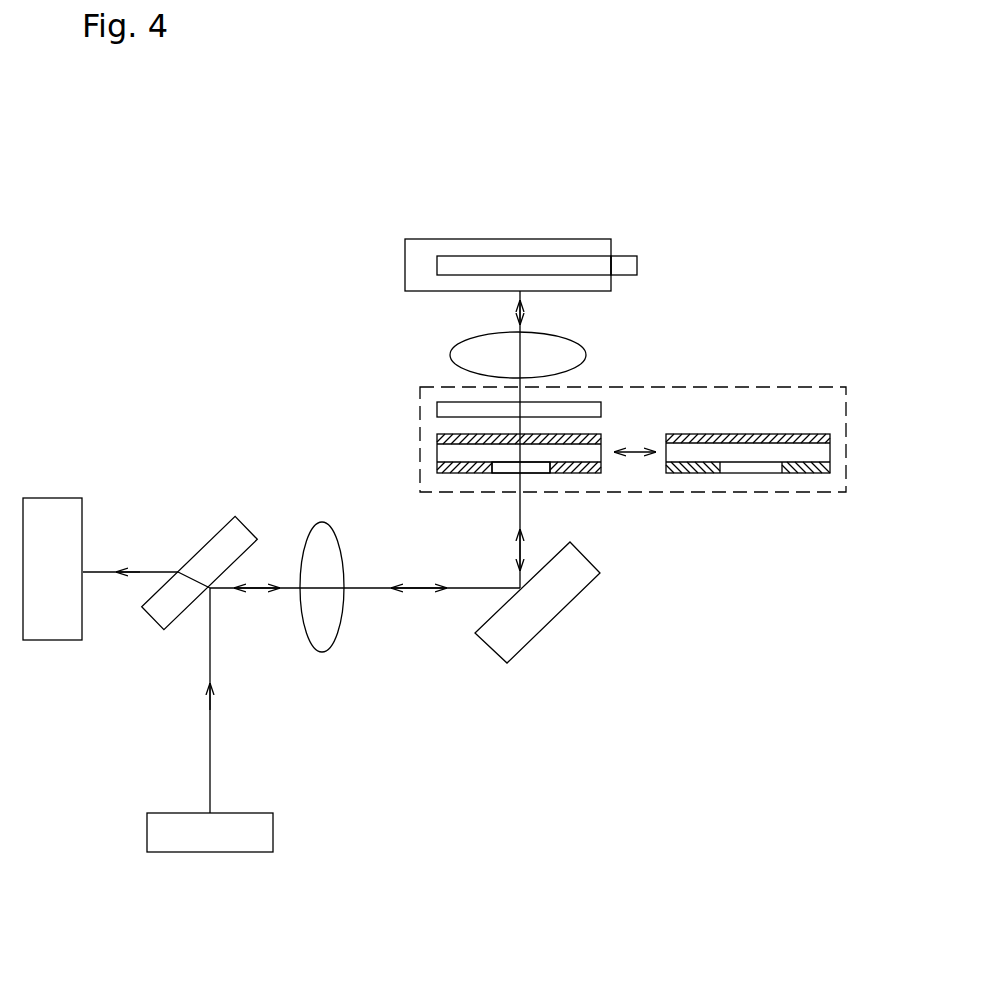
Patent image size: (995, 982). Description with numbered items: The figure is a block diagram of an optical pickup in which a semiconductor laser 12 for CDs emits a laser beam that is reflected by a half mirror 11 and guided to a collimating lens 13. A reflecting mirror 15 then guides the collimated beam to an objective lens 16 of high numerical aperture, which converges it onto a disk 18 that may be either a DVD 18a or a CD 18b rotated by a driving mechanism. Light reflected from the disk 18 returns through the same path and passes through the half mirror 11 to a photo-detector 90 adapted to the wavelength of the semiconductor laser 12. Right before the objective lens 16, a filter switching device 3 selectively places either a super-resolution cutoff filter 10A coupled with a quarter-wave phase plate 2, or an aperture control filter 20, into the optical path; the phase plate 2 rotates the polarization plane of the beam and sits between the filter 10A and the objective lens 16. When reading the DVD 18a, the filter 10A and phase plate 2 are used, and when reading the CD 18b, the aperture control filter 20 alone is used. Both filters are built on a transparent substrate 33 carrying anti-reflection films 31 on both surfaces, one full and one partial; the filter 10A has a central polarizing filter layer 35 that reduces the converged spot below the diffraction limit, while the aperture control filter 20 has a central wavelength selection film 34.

The λ/4 phase plate 2 is at (447, 403).
The filter switching device 3 is at (732, 383).
The super-resolution cutoff filter 10A is at (437, 428).
The half mirror 11 is at (208, 548).
The semiconductor laser 12 is at (225, 855).
The collimating lens 13 is at (305, 535).
The reflecting mirror 15 is at (490, 650).
The objective lens 16 is at (450, 352).
The disk 18 is at (457, 238).
The DVD 18a is at (625, 258).
The CD 18b is at (541, 238).
The aperture control filter 20 is at (802, 435).
The anti-reflection film 31 is at (437, 467).
The transparent substrate 33 is at (603, 447).
The wavelength selection film 34 is at (693, 468).
The polarizing filter layer 35 is at (503, 473).
The photo-detector 90 is at (48, 508).